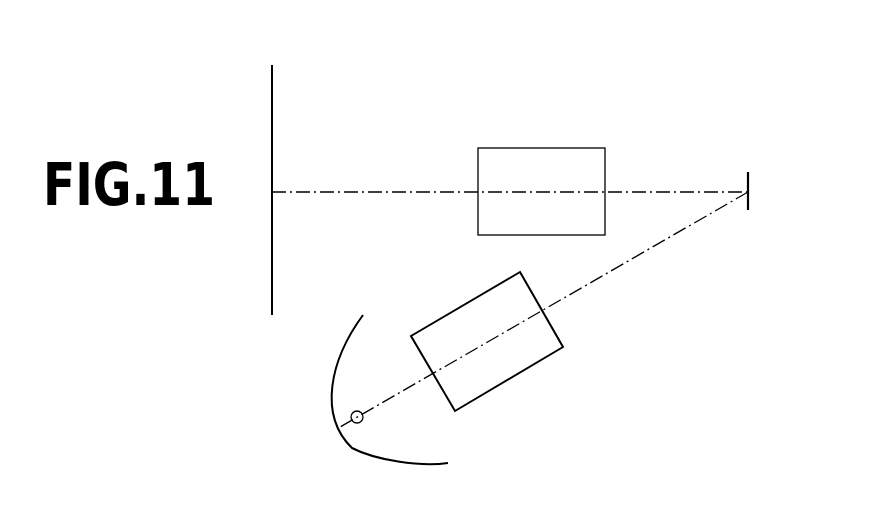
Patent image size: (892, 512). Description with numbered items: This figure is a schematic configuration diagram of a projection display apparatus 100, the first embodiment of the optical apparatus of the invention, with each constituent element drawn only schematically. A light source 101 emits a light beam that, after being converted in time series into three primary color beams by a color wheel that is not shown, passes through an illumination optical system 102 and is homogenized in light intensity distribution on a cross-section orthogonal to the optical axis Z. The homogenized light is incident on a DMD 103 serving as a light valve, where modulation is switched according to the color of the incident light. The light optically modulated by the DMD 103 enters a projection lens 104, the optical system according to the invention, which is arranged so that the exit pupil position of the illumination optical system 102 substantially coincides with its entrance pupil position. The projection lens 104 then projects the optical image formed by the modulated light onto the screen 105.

The projection display apparatus 100 is at (507, 58).
The light source 101 is at (369, 455).
The illumination optical system 102 is at (548, 360).
The DMD 103 is at (750, 200).
The projection lens 104 is at (568, 148).
The screen 105 is at (273, 82).
The optical axis Z is at (641, 255).